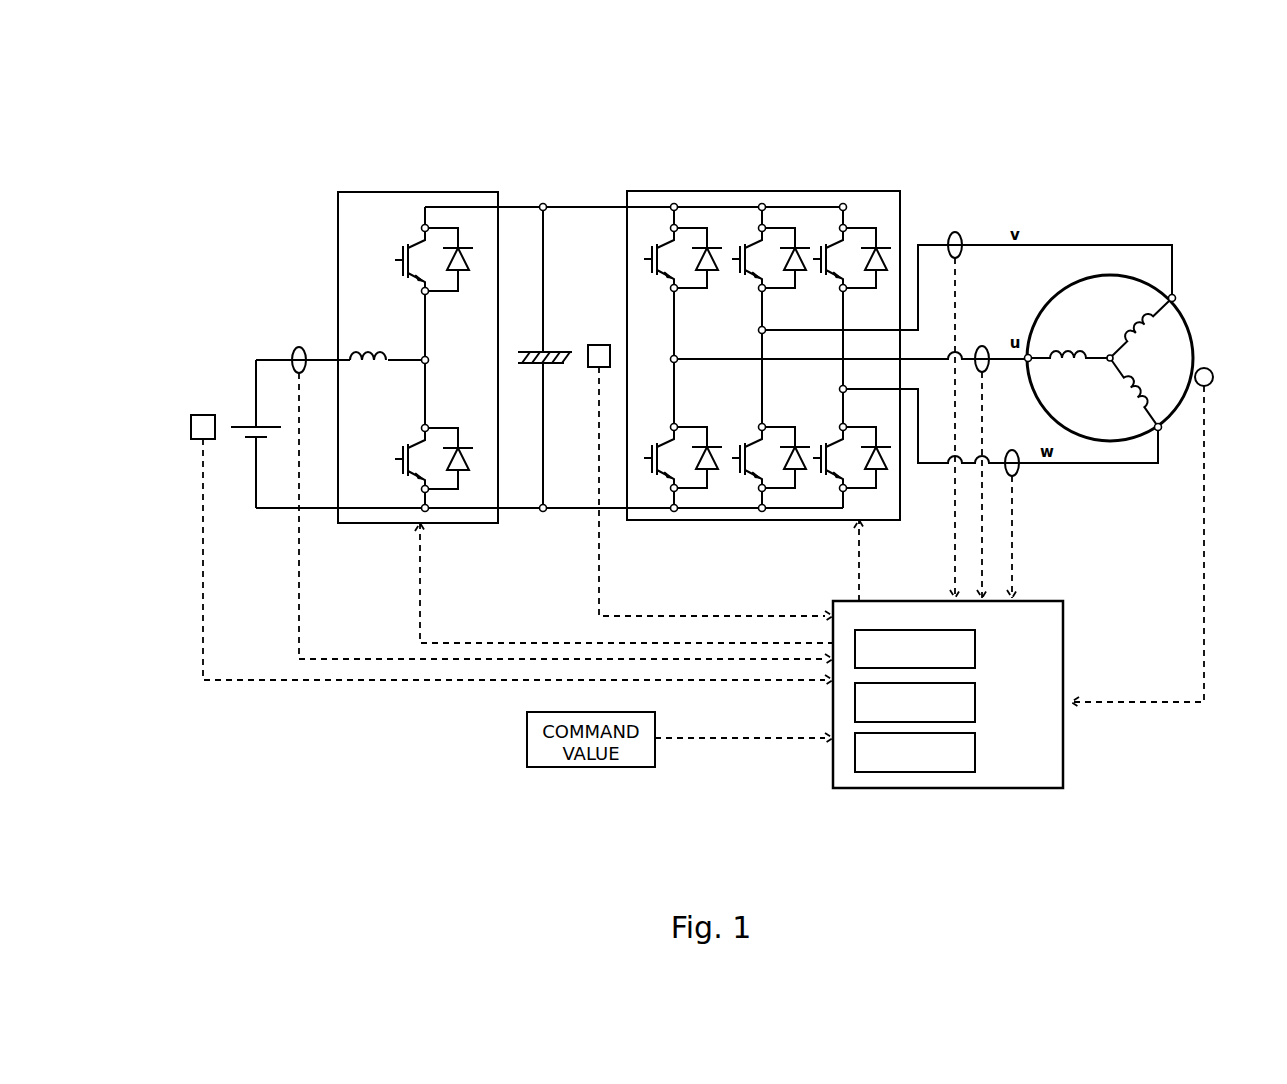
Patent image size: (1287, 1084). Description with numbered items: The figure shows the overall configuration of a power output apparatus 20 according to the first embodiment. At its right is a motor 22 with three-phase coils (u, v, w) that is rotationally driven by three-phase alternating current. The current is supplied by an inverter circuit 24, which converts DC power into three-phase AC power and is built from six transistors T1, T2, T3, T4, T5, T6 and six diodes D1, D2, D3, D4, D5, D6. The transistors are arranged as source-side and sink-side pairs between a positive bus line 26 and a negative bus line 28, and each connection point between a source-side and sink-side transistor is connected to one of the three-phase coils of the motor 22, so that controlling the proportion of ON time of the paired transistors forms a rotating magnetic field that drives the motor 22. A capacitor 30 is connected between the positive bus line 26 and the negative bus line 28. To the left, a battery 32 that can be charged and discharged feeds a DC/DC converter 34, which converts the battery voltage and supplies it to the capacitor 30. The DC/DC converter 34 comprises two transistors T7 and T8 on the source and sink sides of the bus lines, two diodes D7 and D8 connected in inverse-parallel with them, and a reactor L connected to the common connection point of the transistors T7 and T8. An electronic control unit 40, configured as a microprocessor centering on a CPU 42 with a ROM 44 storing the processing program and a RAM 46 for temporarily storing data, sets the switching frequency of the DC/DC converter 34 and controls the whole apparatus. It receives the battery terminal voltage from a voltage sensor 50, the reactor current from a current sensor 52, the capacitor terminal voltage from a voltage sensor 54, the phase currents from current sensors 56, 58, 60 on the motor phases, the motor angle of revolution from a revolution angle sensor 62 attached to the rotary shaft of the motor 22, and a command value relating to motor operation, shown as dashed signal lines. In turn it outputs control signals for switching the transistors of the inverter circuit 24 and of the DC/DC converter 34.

The power output apparatus 20 is at (1080, 188).
The motor 22 is at (1178, 300).
The inverter circuit 24 is at (793, 191).
The positive bus line 26 is at (717, 207).
The negative bus line 28 is at (780, 520).
The capacitor 30 is at (534, 348).
The battery 32 is at (246, 424).
The DC/DC converter 34 is at (420, 192).
The electronic control unit 40 is at (1010, 790).
The CPU 42 is at (977, 648).
The ROM 44 is at (977, 702).
The RAM 46 is at (977, 752).
The voltage sensor 50 is at (205, 415).
The current sensor 52 is at (299, 347).
The voltage sensor 54 is at (598, 345).
The current sensor 56 is at (982, 346).
The current sensor 58 is at (955, 232).
The current sensor 60 is at (1012, 450).
The revolution angle sensor 62 is at (1212, 370).
The reactor L is at (368, 345).
The transistor T1 is at (650, 284).
The transistor T2 is at (656, 441).
The transistor T3 is at (738, 284).
The transistor T4 is at (742, 441).
The transistor T5 is at (820, 284).
The transistor T6 is at (824, 441).
The transistor T7 is at (402, 283).
The transistor T8 is at (404, 442).
The diode D1 is at (712, 278).
The diode D2 is at (710, 439).
The diode D3 is at (800, 278).
The diode D4 is at (798, 439).
The diode D5 is at (881, 278).
The diode D6 is at (879, 439).
The diode D7 is at (462, 275).
The diode D8 is at (460, 441).